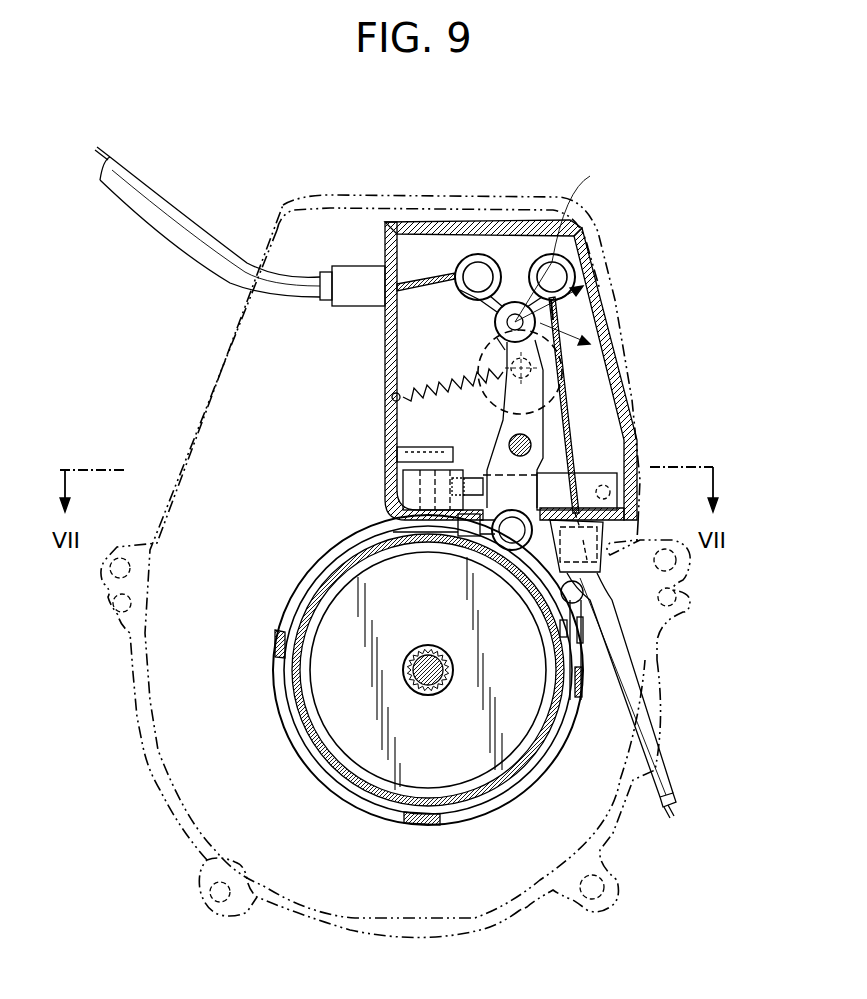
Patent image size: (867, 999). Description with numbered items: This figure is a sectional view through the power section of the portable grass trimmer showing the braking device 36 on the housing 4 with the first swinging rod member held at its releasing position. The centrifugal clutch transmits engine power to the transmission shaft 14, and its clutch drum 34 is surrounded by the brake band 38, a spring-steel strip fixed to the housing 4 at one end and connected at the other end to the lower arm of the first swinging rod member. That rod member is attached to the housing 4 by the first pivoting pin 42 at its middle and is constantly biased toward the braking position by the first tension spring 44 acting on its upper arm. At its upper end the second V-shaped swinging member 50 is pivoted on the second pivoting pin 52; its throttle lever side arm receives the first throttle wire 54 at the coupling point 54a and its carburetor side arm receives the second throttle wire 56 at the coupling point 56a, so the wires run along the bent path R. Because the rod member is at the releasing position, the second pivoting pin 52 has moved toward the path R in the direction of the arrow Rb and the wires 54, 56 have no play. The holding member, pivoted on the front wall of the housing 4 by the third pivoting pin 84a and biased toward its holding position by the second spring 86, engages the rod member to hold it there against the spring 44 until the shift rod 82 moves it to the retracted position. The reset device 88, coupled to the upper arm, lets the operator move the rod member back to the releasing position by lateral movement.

The housing 4 is at (337, 220).
The transmission shaft 14 is at (428, 697).
The clutch drum 34 is at (560, 713).
The braking device 36 is at (468, 835).
The brake band 38 is at (587, 653).
The first pivoting pin 42 is at (505, 437).
The first tension spring 44 is at (430, 378).
The second V-shaped swinging member 50 is at (518, 300).
The second pivoting pin 52 is at (565, 245).
The first throttle wire 54 is at (562, 407).
The coupling point 54a is at (558, 297).
The second throttle wire 56 is at (455, 221).
The coupling point 56a is at (470, 258).
The shift rod 82 is at (612, 493).
The third pivoting pin 84a is at (430, 448).
The second spring 86 is at (400, 462).
The reset device 88 is at (573, 383).
The bent path R is at (563, 240).
The arrow Rb is at (560, 325).